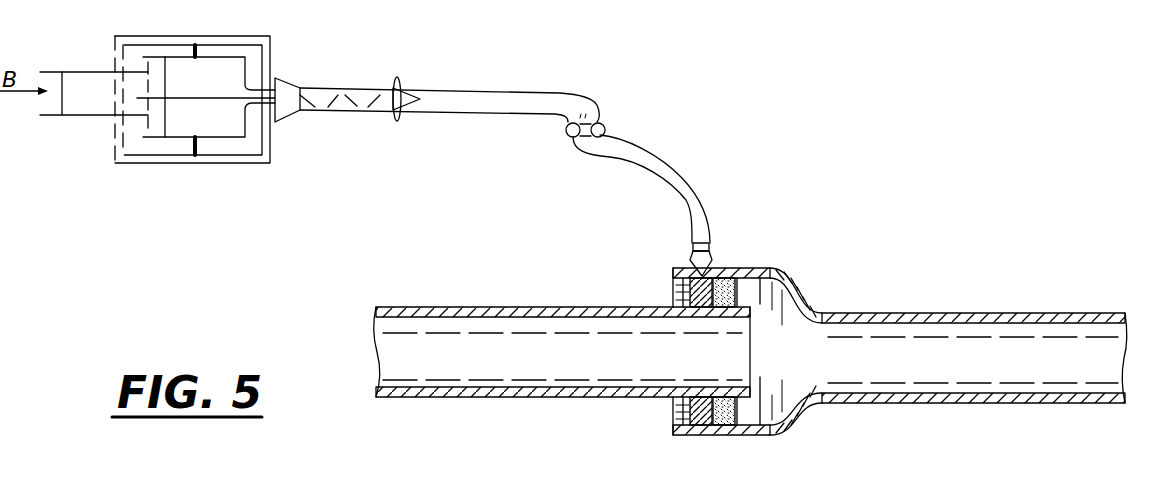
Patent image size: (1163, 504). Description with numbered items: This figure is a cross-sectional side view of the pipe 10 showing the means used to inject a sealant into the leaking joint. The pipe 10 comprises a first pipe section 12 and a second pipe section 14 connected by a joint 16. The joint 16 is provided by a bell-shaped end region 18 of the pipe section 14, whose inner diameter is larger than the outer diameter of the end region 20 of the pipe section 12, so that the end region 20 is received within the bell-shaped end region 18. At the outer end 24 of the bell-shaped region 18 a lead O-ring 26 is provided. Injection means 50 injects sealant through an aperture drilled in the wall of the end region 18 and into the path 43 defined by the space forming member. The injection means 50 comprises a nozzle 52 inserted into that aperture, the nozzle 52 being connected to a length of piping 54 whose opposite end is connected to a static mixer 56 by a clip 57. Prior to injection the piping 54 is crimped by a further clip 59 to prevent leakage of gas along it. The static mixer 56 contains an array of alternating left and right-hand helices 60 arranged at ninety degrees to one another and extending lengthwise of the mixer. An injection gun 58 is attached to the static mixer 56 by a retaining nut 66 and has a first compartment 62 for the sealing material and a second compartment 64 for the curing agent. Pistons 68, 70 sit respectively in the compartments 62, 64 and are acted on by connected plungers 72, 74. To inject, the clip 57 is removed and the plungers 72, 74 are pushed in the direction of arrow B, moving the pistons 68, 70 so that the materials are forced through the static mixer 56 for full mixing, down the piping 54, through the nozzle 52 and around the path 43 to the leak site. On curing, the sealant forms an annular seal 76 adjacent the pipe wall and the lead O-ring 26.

The pipe 10 is at (750, 341).
The first pipe section 12 is at (540, 398).
The second pipe section 14 is at (1000, 400).
The joint 16 is at (715, 375).
The bell-shaped end region 18 is at (760, 278).
The end region 20 is at (718, 390).
The outer end 24 is at (682, 265).
The lead O-ring 26 is at (677, 410).
The path 43 is at (699, 302).
The injection means 50 is at (522, 143).
The nozzle 52 is at (710, 256).
The piping 54 is at (680, 175).
The static mixer 56 is at (355, 88).
The clip 57 is at (398, 85).
The injection gun 58 is at (174, 121).
The clip 59 is at (605, 130).
The helices 60 is at (335, 105).
The first compartment 62 is at (230, 72).
The second compartment 64 is at (220, 125).
The retaining nut 66 is at (286, 112).
The piston 68 is at (163, 67).
The piston 70 is at (160, 125).
The plunger 72 is at (87, 72).
The plunger 74 is at (87, 117).
The annular seal 76 is at (673, 283).